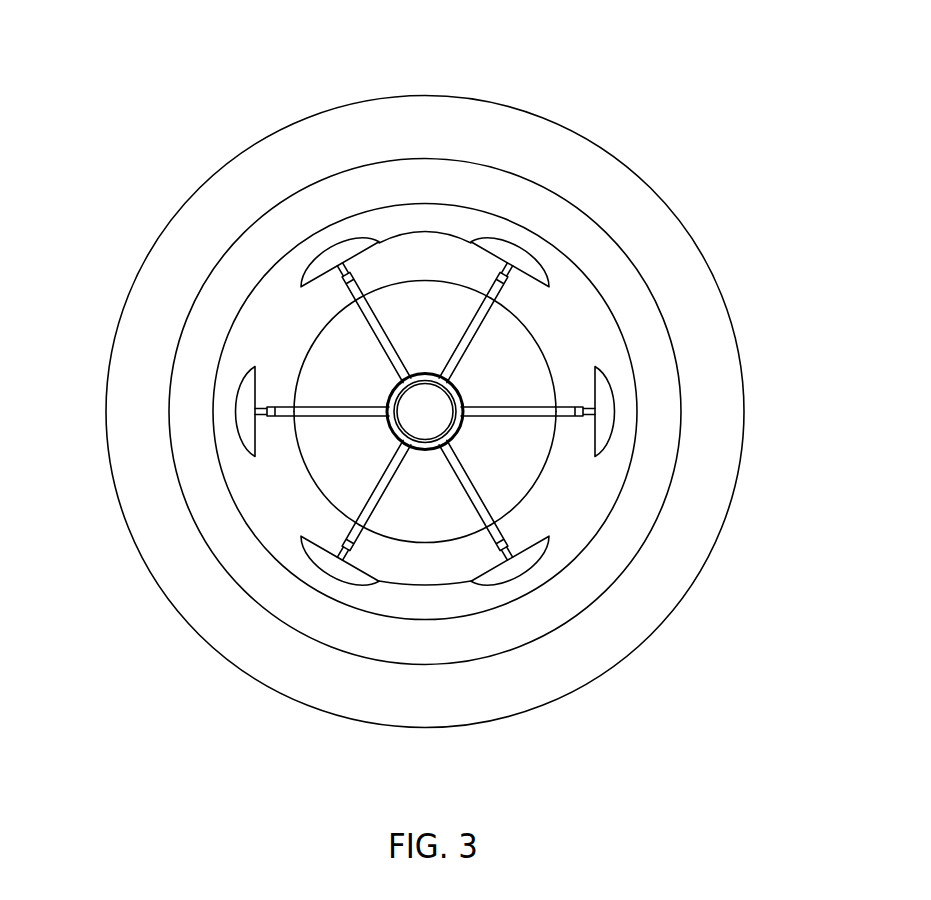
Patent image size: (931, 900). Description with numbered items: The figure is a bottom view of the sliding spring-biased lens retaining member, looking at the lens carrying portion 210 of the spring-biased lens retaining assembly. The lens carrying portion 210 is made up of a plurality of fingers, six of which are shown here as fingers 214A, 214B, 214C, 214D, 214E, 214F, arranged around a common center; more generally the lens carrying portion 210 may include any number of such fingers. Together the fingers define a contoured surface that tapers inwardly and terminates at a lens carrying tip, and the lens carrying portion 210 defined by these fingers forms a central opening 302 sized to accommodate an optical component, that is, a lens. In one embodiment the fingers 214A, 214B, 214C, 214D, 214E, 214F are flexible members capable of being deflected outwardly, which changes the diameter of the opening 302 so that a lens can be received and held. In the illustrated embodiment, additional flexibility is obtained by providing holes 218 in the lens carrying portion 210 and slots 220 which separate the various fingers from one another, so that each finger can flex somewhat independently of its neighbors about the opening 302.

The lens carrying portion 210 is at (148, 87).
The finger 214A is at (313, 337).
The finger 214B is at (442, 282).
The finger 214C is at (545, 337).
The finger 214D is at (543, 468).
The finger 214E is at (435, 543).
The finger 214F is at (315, 484).
The hole 218 is at (483, 277).
The slot 220 is at (333, 560).
The opening 302 is at (425, 412).